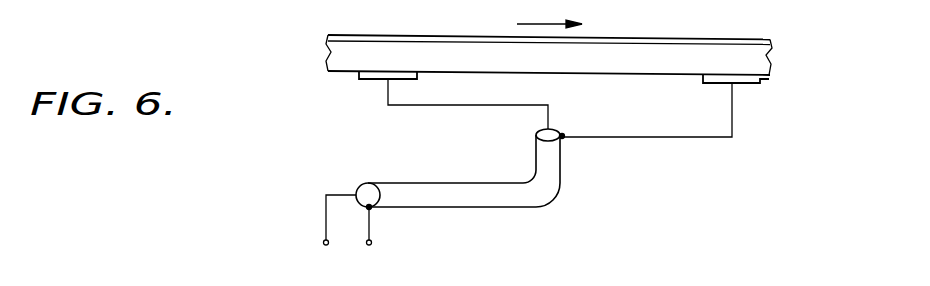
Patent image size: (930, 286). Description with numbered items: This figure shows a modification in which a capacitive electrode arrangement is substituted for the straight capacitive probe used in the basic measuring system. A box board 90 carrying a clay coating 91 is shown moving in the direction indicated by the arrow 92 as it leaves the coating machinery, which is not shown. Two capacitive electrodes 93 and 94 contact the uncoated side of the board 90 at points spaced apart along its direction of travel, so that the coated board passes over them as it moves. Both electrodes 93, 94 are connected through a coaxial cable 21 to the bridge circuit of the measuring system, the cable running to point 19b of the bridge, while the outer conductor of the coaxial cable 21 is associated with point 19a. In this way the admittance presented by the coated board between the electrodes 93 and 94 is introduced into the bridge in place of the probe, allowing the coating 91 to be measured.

The box board 90 is at (766, 58).
The clay coating 91 is at (680, 39).
The arrow 92 is at (553, 24).
The capacitive electrode 93 is at (366, 82).
The capacitive electrode 94 is at (748, 85).
The coaxial cable 21 is at (557, 195).
The point 19a is at (372, 243).
The point 19b is at (323, 243).